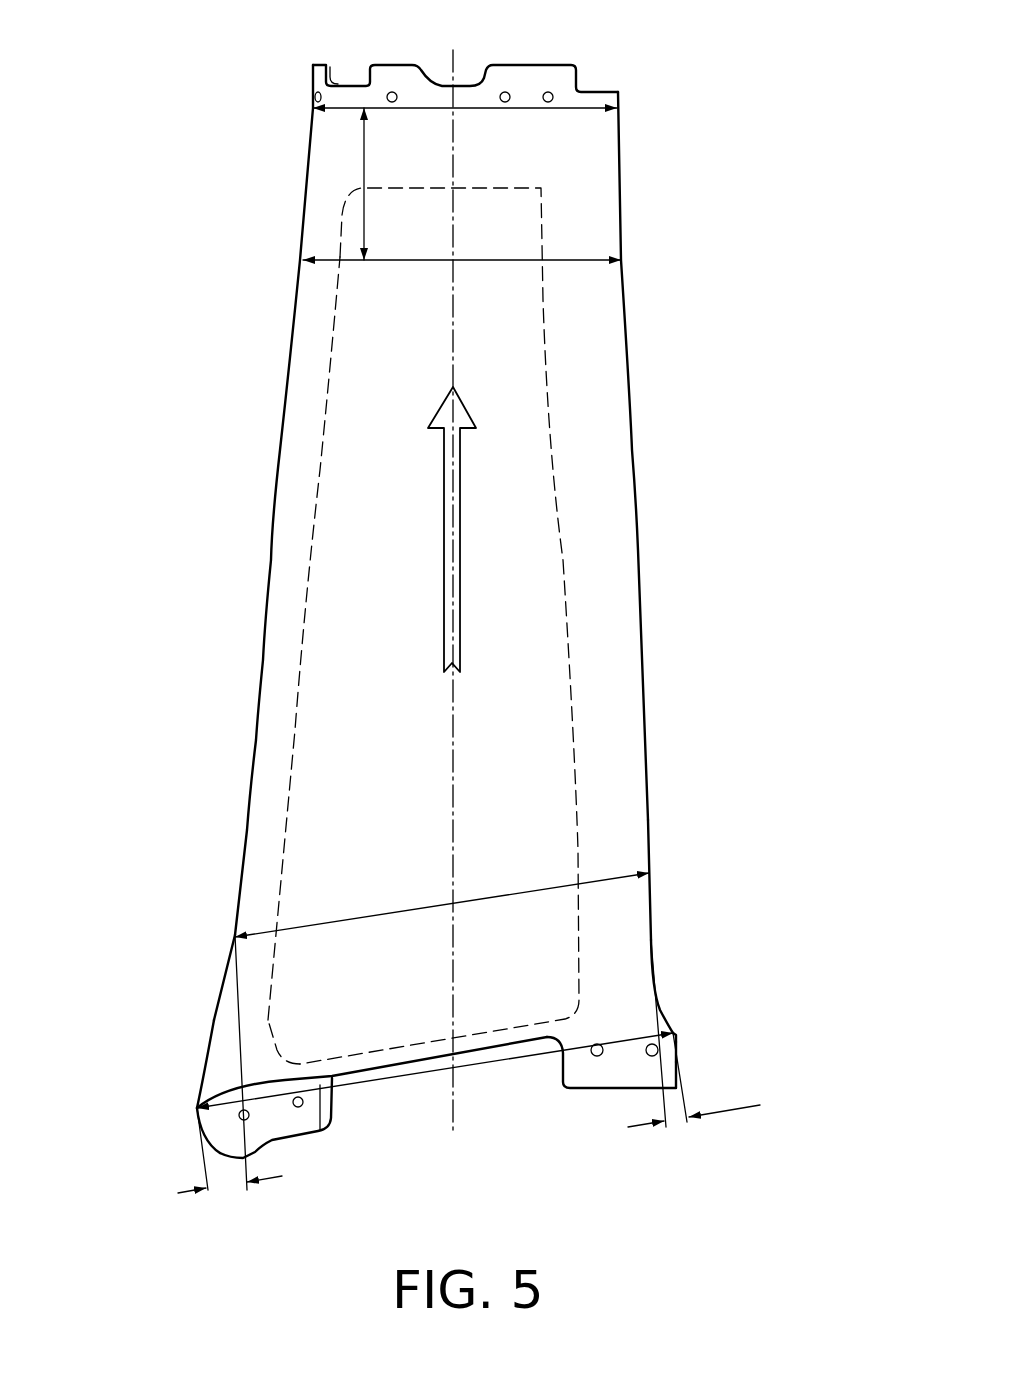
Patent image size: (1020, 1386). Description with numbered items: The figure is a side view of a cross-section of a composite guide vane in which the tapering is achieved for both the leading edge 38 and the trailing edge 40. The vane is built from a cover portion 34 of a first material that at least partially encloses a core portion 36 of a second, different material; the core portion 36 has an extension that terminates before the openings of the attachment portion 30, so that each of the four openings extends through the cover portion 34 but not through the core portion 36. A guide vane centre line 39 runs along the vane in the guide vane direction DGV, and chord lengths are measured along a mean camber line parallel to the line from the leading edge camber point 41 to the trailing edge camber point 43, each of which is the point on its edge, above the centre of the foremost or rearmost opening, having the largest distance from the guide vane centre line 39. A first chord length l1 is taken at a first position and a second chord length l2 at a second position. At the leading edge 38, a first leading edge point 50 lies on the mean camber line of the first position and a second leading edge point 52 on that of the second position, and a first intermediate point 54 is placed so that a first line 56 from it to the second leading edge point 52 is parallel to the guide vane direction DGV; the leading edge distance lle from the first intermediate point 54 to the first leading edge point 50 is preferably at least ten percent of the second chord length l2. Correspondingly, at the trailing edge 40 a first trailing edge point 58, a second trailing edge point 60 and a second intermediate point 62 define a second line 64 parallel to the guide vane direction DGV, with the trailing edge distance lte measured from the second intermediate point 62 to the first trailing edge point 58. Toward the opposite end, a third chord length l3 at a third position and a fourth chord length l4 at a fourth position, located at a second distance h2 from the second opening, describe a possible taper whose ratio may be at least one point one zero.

The attachment portion 30 is at (482, 1106).
The cover portion 34 is at (338, 142).
The core portion 36 is at (508, 660).
The leading edge 38 is at (266, 514).
The guide vane centre line 39 is at (455, 737).
The trailing edge 40 is at (639, 546).
The leading edge camber point 41 is at (188, 1112).
The trailing edge camber point 43 is at (682, 1038).
The first leading edge point 50 is at (192, 1106).
The second leading edge point 52 is at (233, 937).
The first intermediate point 54 is at (227, 1094).
The first line 56 is at (245, 1002).
The first trailing edge point 58 is at (679, 1031).
The second trailing edge point 60 is at (652, 872).
The second intermediate point 62 is at (622, 1020).
The second line 64 is at (660, 988).
The guide vane direction DGV is at (460, 508).
The first chord length l1 is at (492, 1062).
The second chord length l2 is at (442, 896).
The third chord length l3 is at (483, 108).
The fourth chord length l4 is at (462, 244).
The second distance h2 is at (363, 168).
The leading edge distance lle is at (211, 1064).
The trailing edge distance lte is at (694, 1033).